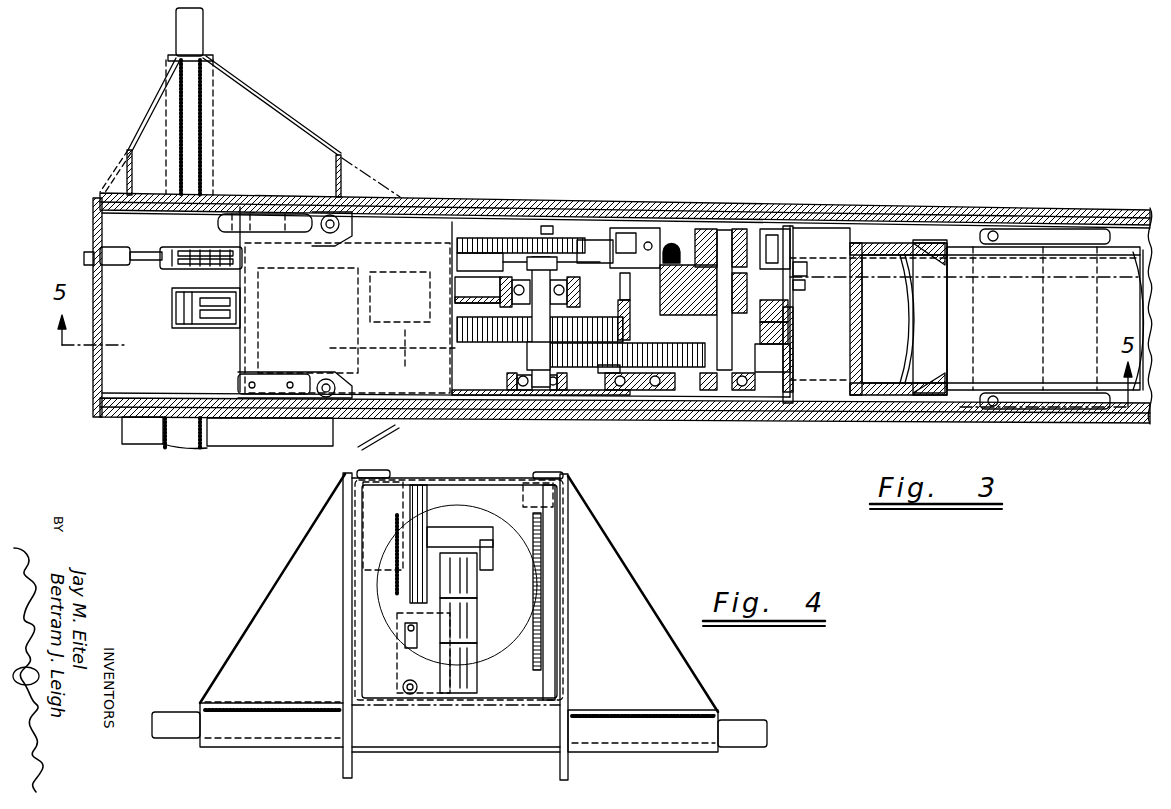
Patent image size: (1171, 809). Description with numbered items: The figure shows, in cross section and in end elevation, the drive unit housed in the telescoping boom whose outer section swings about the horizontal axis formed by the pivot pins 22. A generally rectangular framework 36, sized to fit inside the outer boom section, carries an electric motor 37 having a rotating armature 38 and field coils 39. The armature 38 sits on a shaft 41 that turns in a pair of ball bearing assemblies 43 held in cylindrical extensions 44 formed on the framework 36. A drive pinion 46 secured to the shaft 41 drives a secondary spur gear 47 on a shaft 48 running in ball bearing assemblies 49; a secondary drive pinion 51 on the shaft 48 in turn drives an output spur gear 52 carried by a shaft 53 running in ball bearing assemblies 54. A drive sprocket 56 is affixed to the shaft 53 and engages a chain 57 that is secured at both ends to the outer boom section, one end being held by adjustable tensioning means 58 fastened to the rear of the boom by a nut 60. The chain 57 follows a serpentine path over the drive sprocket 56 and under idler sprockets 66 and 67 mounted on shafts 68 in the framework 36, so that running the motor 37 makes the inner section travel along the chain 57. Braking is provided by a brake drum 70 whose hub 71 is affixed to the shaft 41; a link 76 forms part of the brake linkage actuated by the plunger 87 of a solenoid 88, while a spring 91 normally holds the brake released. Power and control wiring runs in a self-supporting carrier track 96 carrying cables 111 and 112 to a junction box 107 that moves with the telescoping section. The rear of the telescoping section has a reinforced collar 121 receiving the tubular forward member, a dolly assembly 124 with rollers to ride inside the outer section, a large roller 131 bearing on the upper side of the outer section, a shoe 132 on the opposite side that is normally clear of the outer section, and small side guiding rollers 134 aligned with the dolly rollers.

In FIG. 3, the pivot pins 22 is at (198, 36).
In FIG. 4, the pivot pins 22 is at (169, 715).
In FIG. 3, the framework 36 is at (820, 230).
In FIG. 3, the electric motor 37 is at (792, 273).
In FIG. 3, the rotating armature 38 is at (793, 285).
In FIG. 3, the field coils 39 is at (673, 242).
In FIG. 3, the shaft 41 is at (724, 273).
In FIG. 3, the ball bearing assemblies 43 is at (740, 322).
In FIG. 3, the cylindrical extensions 44 is at (760, 344).
In FIG. 3, the drive pinion 46 is at (762, 388).
In FIG. 3, the secondary spur gear 47 is at (689, 362).
In FIG. 3, the shaft 48 is at (665, 370).
In FIG. 3, the ball bearing assemblies 49 is at (603, 370).
In FIG. 3, the secondary drive pinion 51 is at (628, 318).
In FIG. 3, the output spur gear 52 is at (470, 342).
In FIG. 3, the shaft 53 is at (530, 342).
In FIG. 3, the ball bearing assemblies 54 is at (532, 297).
In FIG. 3, the drive sprocket 56 is at (538, 227).
In FIG. 3, the chain 57 is at (210, 247).
In FIG. 3, the adjustable tensioning means 58 is at (140, 263).
In FIG. 3, the nut 60 is at (89, 252).
In FIG. 3, the idler sprocket 66 is at (483, 230).
In FIG. 4, the idler sprocket 66 is at (410, 642).
In FIG. 3, the idler sprocket 67 is at (578, 240).
In FIG. 3, the shafts 68 is at (478, 214).
In FIG. 3, the brake drum 70 is at (770, 229).
In FIG. 3, the hub 71 is at (700, 265).
In FIG. 3, the link 76 is at (638, 228).
In FIG. 3, the plunger 87 is at (427, 268).
In FIG. 3, the solenoid 88 is at (347, 318).
In FIG. 3, the spring 91 is at (547, 225).
In FIG. 3, the self-supporting carrier track 96 is at (180, 328).
In FIG. 4, the self-supporting carrier track 96 is at (482, 604).
In FIG. 3, the junction box 107 is at (404, 337).
In FIG. 4, the junction box 107 is at (485, 543).
In FIG. 4, the cable 111 is at (468, 578).
In FIG. 4, the cable 112 is at (470, 633).
In FIG. 3, the collar 121 is at (933, 243).
In FIG. 3, the dolly assembly 124 is at (973, 365).
In FIG. 3, the roller 131 is at (262, 216).
In FIG. 3, the shoe 132 is at (241, 379).
In FIG. 3, the side guiding rollers 134 is at (327, 214).